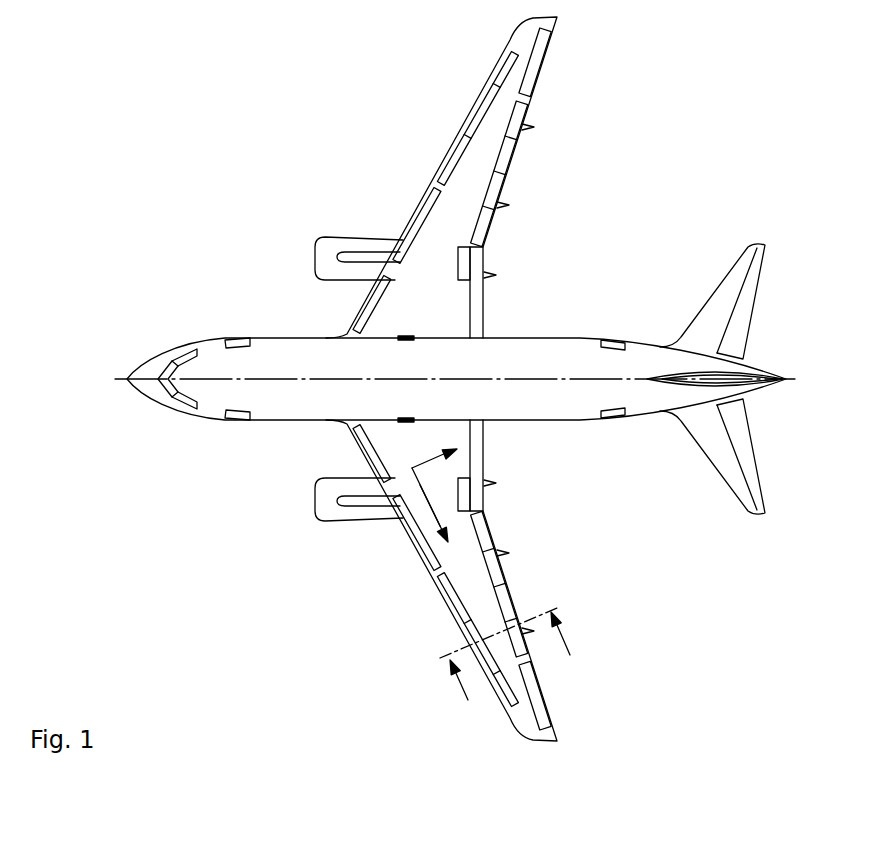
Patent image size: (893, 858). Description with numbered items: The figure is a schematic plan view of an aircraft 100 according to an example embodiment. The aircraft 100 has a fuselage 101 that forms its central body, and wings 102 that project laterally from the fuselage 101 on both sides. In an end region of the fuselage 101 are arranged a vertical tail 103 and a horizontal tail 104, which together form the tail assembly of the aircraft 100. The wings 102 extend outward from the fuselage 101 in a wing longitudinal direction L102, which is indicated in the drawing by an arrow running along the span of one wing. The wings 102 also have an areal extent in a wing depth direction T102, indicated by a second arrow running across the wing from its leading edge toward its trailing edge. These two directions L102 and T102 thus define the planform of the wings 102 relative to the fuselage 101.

The aircraft 100 is at (186, 216).
The fuselage 101 is at (276, 338).
The wings 102 is at (460, 178).
The vertical tail 103 is at (718, 378).
The horizontal tail 104 is at (743, 260).
The wing depth direction T102 is at (412, 468).
The wing longitudinal direction L102 is at (428, 499).